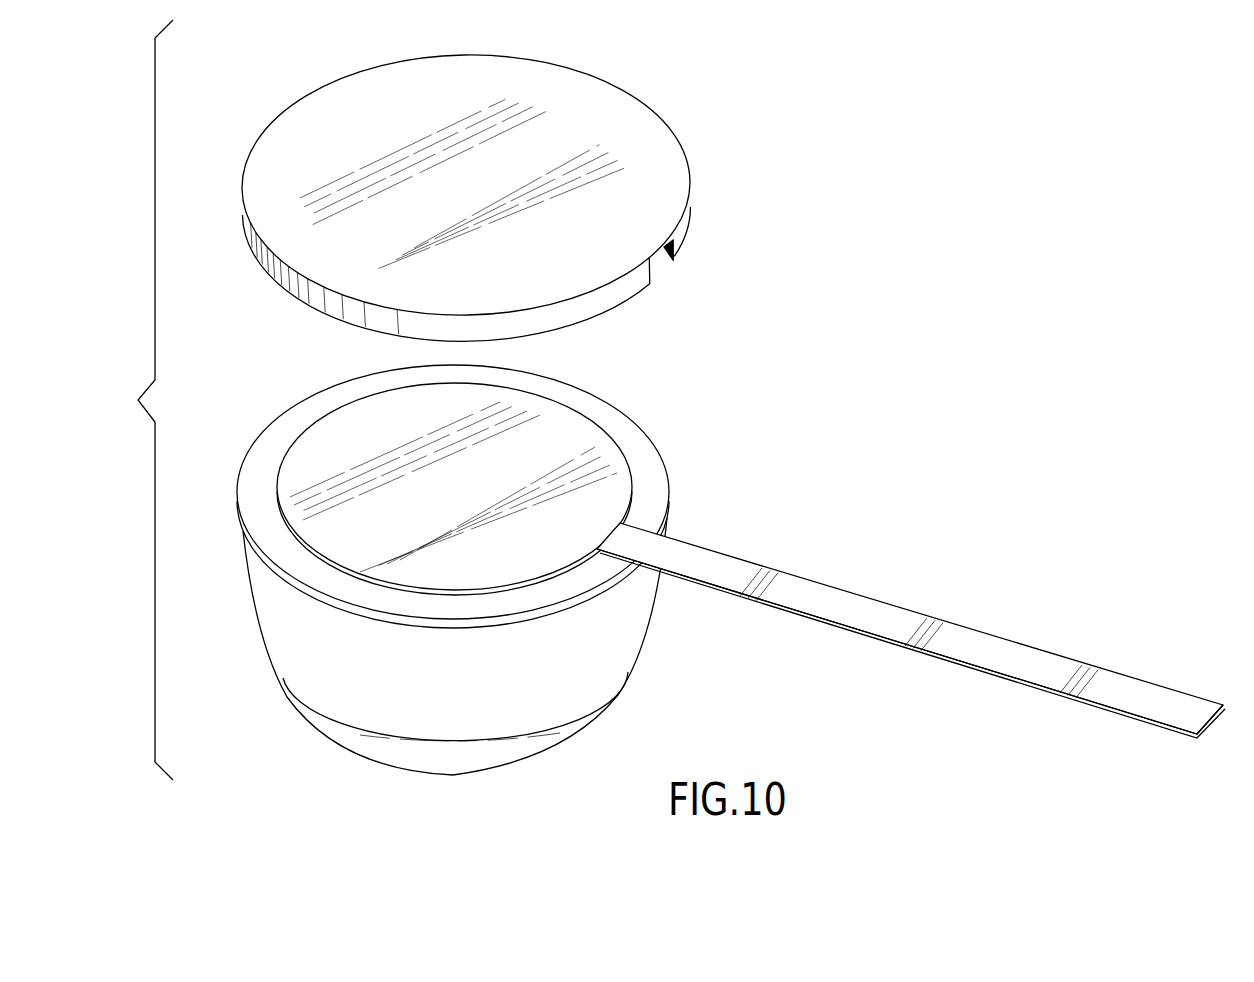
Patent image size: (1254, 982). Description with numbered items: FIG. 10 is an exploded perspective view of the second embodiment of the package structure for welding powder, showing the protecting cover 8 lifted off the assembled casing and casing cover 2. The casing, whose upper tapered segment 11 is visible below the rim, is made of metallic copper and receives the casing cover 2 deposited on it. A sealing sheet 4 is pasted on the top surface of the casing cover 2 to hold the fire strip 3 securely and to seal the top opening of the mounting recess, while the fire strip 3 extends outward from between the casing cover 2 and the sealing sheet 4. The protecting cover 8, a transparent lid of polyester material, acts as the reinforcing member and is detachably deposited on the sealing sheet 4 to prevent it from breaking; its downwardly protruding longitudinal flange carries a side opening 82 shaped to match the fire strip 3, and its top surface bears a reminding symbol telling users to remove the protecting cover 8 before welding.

The casing cover 2 is at (645, 465).
The fire strip 3 is at (865, 608).
The sealing sheet 4 is at (338, 450).
The protecting cover 8 is at (328, 137).
The upper tapered segment 11 is at (340, 685).
The side opening 82 is at (660, 268).